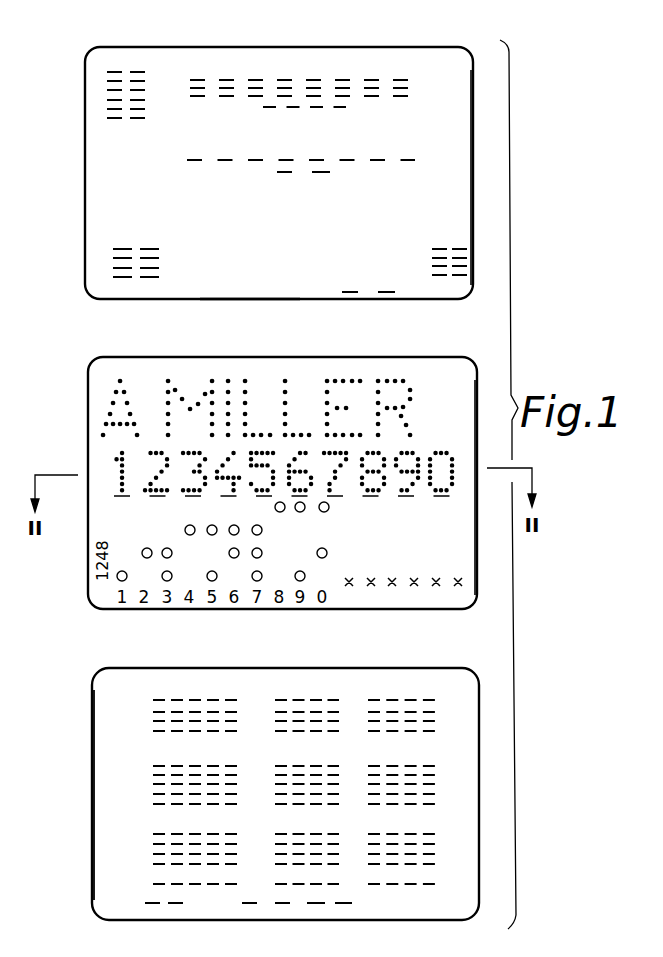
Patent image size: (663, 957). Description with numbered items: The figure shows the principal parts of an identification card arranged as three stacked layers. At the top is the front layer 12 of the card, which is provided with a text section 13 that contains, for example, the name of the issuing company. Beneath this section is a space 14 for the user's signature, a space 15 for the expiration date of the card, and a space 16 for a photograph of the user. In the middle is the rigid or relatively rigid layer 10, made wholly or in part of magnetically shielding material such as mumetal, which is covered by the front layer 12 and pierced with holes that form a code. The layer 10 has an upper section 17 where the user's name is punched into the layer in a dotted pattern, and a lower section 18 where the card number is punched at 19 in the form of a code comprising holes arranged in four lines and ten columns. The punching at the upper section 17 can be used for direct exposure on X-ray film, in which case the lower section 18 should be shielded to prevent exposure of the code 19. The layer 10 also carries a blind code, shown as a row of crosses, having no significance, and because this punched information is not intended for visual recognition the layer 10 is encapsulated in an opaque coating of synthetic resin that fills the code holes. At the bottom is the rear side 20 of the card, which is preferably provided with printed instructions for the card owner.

The magnetically shielding layer 10 is at (470, 597).
The front layer 12 is at (90, 208).
The text section 13 is at (250, 80).
The space for the user's signature 14 is at (380, 160).
The space for the expiration date 15 is at (380, 296).
The space for a photograph 16 is at (248, 285).
The upper section 17 is at (97, 401).
The lower section 18 is at (468, 543).
The card number code 19 is at (318, 541).
The rear side 20 is at (97, 826).